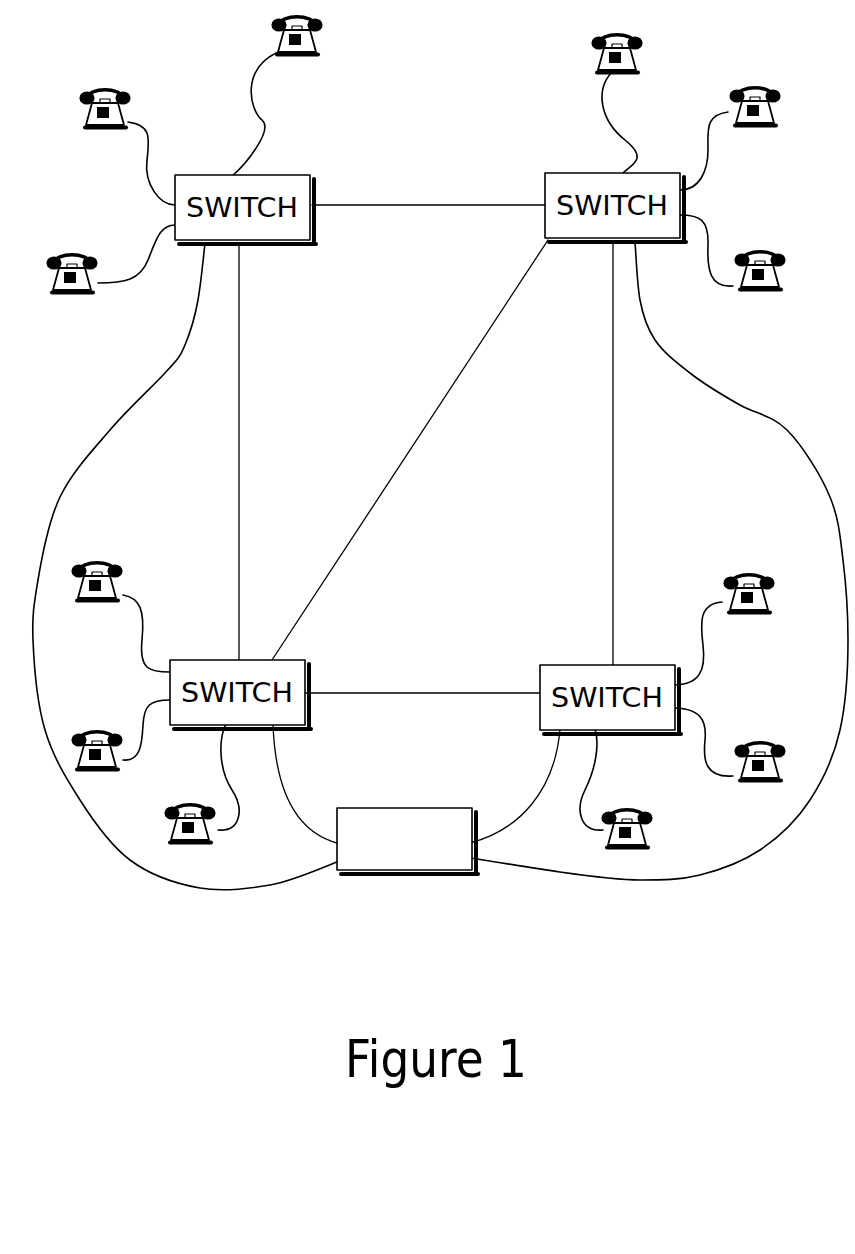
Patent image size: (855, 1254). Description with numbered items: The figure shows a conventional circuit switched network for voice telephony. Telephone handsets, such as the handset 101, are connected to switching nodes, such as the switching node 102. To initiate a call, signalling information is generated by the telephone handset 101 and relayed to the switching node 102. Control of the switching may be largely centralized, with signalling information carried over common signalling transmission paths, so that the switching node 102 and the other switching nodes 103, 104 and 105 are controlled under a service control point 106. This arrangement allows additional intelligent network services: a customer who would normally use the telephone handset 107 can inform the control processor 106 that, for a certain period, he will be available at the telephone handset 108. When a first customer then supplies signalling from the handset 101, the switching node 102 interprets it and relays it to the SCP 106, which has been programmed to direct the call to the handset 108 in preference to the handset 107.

The telephone handset 101 is at (305, 48).
The switching node 102 is at (297, 192).
The switching node 103 is at (557, 188).
The switching node 104 is at (295, 687).
The switching node 105 is at (552, 676).
The service control point (SCP) 106 is at (420, 857).
The telephone handset 107 is at (653, 834).
The telephone handset 108 is at (625, 60).